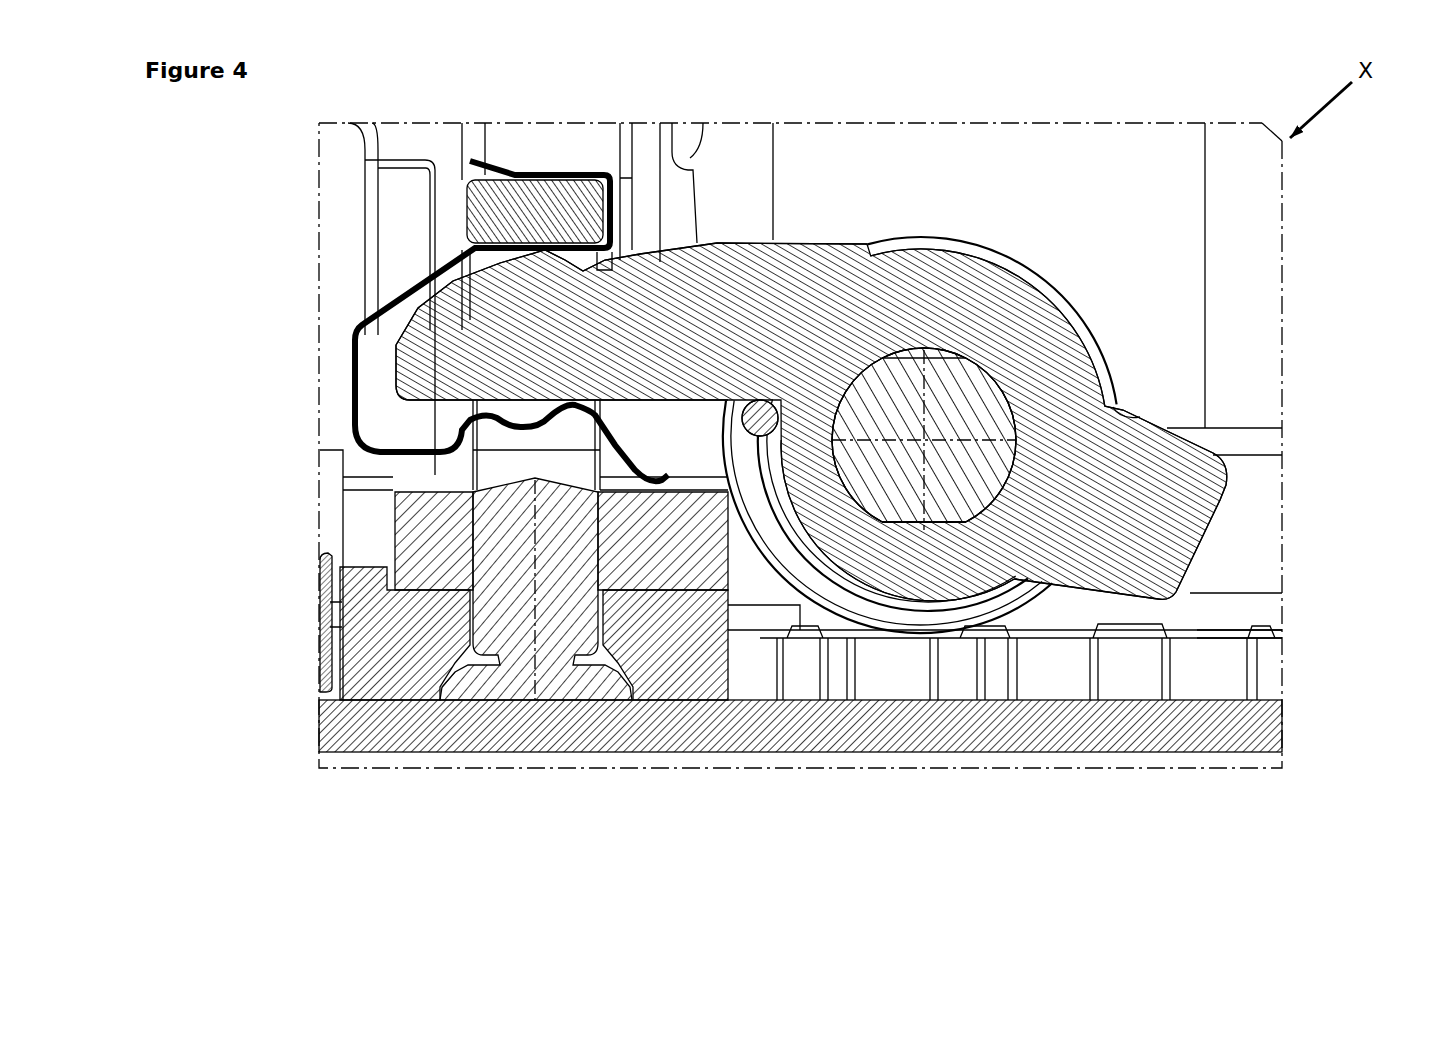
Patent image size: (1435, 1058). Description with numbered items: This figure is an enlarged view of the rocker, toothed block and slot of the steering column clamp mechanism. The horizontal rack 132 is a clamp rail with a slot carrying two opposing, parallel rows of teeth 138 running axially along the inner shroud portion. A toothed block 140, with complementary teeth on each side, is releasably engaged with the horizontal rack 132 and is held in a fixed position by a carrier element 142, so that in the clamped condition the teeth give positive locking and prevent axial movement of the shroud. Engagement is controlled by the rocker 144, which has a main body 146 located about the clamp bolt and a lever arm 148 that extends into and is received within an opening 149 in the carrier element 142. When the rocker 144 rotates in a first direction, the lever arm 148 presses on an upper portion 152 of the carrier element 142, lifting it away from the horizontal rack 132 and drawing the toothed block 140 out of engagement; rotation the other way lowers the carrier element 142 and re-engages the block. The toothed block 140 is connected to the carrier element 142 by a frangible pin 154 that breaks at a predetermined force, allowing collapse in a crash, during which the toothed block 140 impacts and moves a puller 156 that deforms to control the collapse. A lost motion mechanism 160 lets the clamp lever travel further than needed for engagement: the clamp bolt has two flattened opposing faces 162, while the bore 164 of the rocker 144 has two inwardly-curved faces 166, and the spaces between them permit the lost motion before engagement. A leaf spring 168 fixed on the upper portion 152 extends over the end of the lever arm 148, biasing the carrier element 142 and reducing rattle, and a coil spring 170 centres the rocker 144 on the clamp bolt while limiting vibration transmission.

The horizontal rack 132 is at (905, 665).
The teeth 138 is at (985, 665).
The toothed block 140 is at (400, 652).
The carrier element 142 is at (425, 535).
The rocker 144 is at (911, 480).
The main body 146 is at (953, 310).
The lever arm 148 is at (643, 303).
The opening 149 is at (578, 268).
The upper portion 152 is at (505, 210).
The frangible pin 154 is at (521, 636).
The puller 156 is at (323, 625).
The lost motion mechanism 160 is at (714, 222).
The opposing faces 162 is at (949, 357).
The bore 164 is at (889, 358).
The inwardly-curved faces 166 is at (915, 362).
The leaf spring 168 is at (420, 290).
The coil spring 170 is at (762, 386).